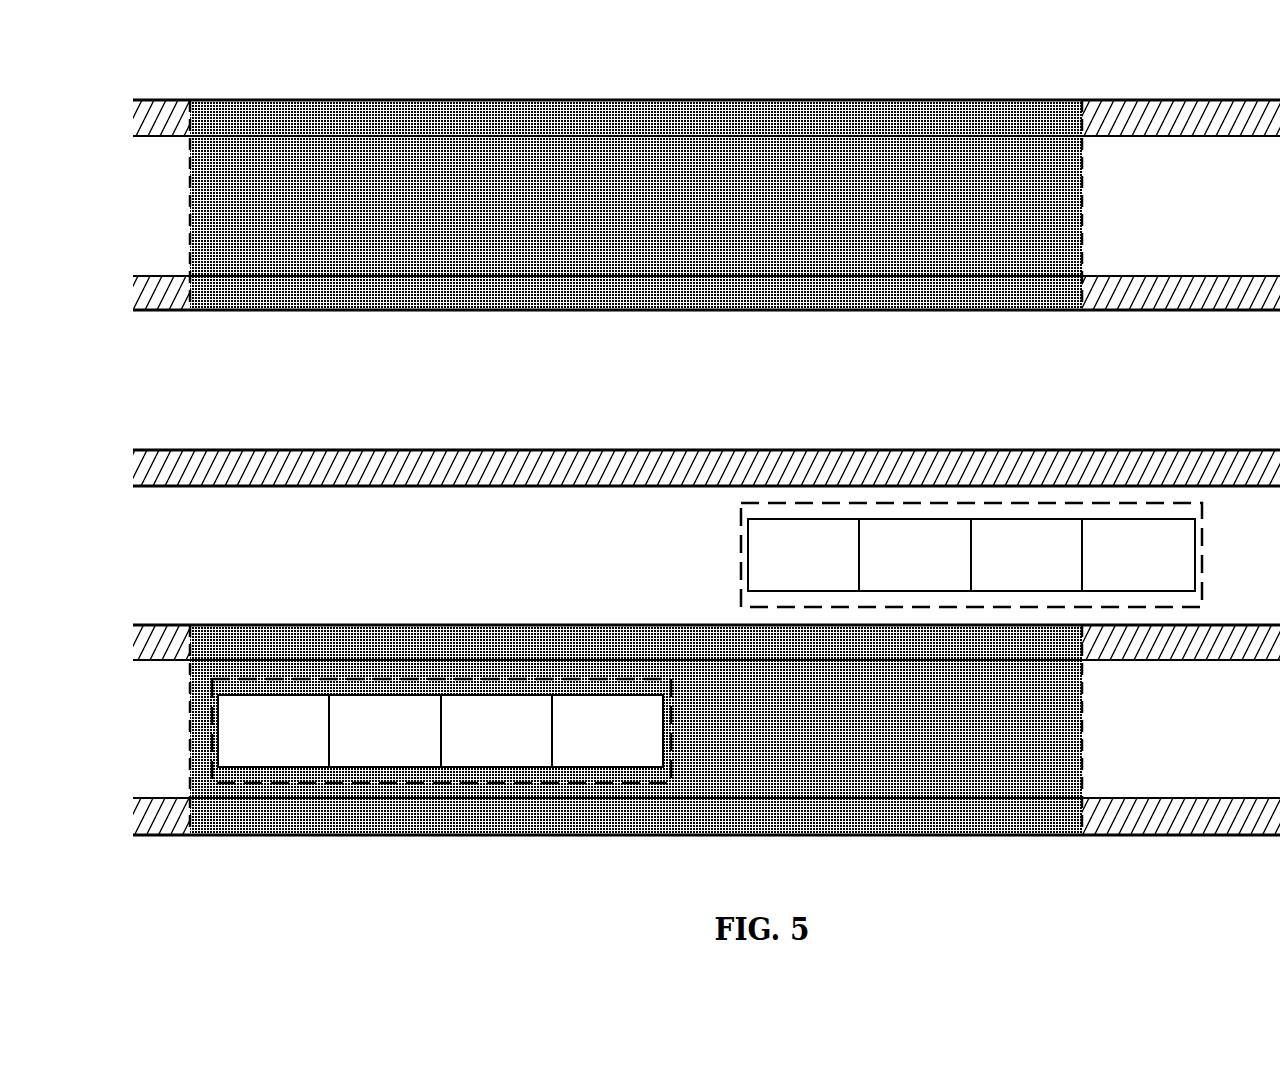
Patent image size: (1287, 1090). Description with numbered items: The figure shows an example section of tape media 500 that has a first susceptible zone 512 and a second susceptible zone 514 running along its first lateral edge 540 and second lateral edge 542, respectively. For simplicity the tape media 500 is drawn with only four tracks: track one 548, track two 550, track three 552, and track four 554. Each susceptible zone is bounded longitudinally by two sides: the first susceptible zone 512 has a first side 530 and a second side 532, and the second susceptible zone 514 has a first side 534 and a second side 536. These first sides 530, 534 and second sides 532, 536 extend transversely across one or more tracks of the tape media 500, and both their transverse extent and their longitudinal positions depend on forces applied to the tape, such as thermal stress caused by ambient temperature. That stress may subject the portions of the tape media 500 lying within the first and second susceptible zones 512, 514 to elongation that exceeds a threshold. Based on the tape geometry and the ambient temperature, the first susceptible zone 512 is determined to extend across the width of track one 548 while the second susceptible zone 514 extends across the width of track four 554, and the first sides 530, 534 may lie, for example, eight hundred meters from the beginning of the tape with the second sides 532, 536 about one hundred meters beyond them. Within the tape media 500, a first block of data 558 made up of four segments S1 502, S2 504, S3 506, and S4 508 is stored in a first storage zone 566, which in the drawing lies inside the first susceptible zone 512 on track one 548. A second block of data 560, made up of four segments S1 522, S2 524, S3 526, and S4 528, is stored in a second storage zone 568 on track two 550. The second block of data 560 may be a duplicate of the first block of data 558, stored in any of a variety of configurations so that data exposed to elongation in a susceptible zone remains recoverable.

The tape media 500 is at (130, 32).
The segment S1 502 is at (254, 756).
The segment S2 504 is at (366, 756).
The segment S3 506 is at (477, 756).
The segment S4 508 is at (588, 756).
The first susceptible zone 512 is at (901, 742).
The second susceptible zone 514 is at (649, 210).
The segment S1 522 is at (784, 581).
The segment S2 524 is at (895, 581).
The segment S3 526 is at (1007, 581).
The segment S4 528 is at (1119, 581).
The first side 530 is at (190, 725).
The second side 532 is at (1083, 725).
The first side 534 is at (190, 205).
The second side 536 is at (1083, 202).
The first lateral edge 540 is at (907, 846).
The second lateral edge 542 is at (911, 94).
The track one 548 is at (1212, 732).
The track two 550 is at (1218, 565).
The track three 552 is at (1207, 395).
The track four 554 is at (1217, 215).
The first block of data 558 is at (664, 686).
The second block of data 560 is at (747, 508).
The first storage zone 566 is at (358, 678).
The second storage zone 568 is at (741, 592).